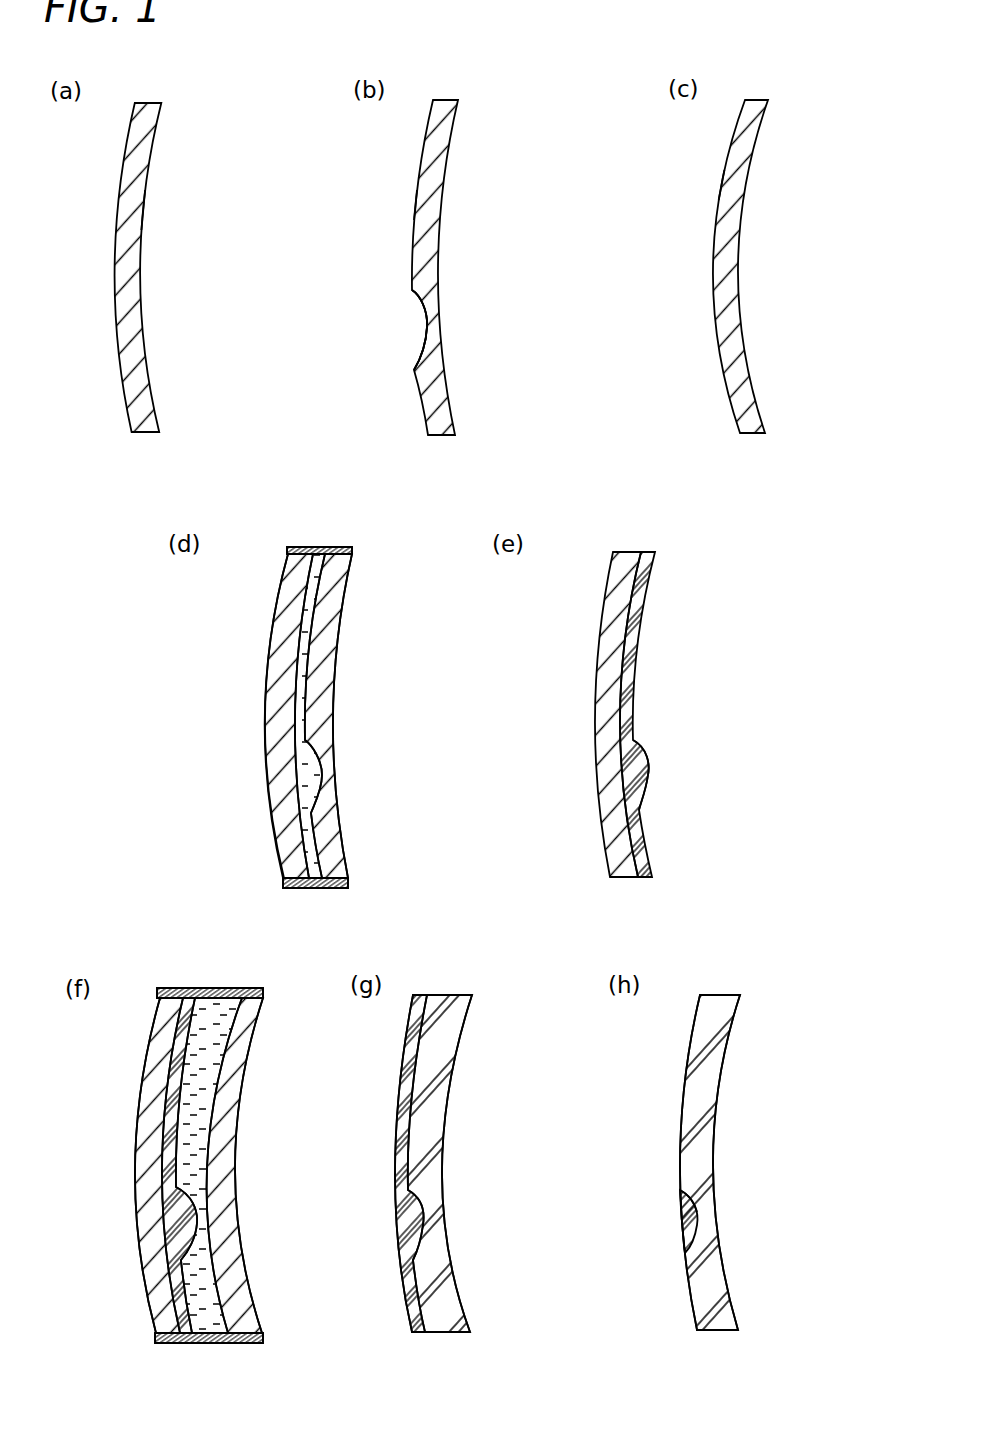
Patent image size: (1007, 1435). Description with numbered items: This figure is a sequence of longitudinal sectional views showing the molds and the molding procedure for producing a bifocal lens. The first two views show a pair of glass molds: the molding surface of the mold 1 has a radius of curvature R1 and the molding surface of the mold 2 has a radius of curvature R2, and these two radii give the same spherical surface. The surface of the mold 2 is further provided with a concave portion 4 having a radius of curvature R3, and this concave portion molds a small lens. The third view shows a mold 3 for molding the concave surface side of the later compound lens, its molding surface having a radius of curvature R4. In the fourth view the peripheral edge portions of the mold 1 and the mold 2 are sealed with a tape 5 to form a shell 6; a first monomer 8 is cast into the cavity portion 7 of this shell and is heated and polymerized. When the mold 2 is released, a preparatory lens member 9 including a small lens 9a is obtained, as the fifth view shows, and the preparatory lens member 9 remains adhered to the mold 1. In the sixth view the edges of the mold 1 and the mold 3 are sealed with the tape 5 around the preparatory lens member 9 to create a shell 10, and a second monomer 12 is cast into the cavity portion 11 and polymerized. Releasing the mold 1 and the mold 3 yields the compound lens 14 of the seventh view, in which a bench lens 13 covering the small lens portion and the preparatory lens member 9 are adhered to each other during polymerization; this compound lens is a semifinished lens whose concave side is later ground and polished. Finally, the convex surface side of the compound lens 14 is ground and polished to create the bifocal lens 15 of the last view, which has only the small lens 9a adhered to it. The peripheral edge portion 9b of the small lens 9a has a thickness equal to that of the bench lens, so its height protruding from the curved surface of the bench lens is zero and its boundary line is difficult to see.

The mold 1 is at (138, 156).
The mold 2 is at (453, 148).
The mold 3 is at (720, 232).
The mold concave portion 4 is at (389, 365).
The tape 5 is at (321, 546).
The shell 6 is at (230, 679).
The cavity portion 7 is at (300, 697).
The first monomer 8 is at (307, 607).
The preparatory lens member 9 is at (634, 692).
The small lens 9a is at (660, 778).
The peripheral edge portion 9b is at (672, 1184).
The shell 10 is at (113, 1096).
The cavity portion 11 is at (197, 1140).
The second monomer 12 is at (203, 1055).
The bench lens 13 is at (437, 1117).
The compound lens 14 is at (481, 1086).
The bifocal lens 15 is at (750, 1103).
The radius of curvature R1 is at (193, 209).
The radius of curvature R2 is at (408, 208).
The radius of curvature R3 is at (419, 336).
The radius of curvature R4 is at (712, 178).